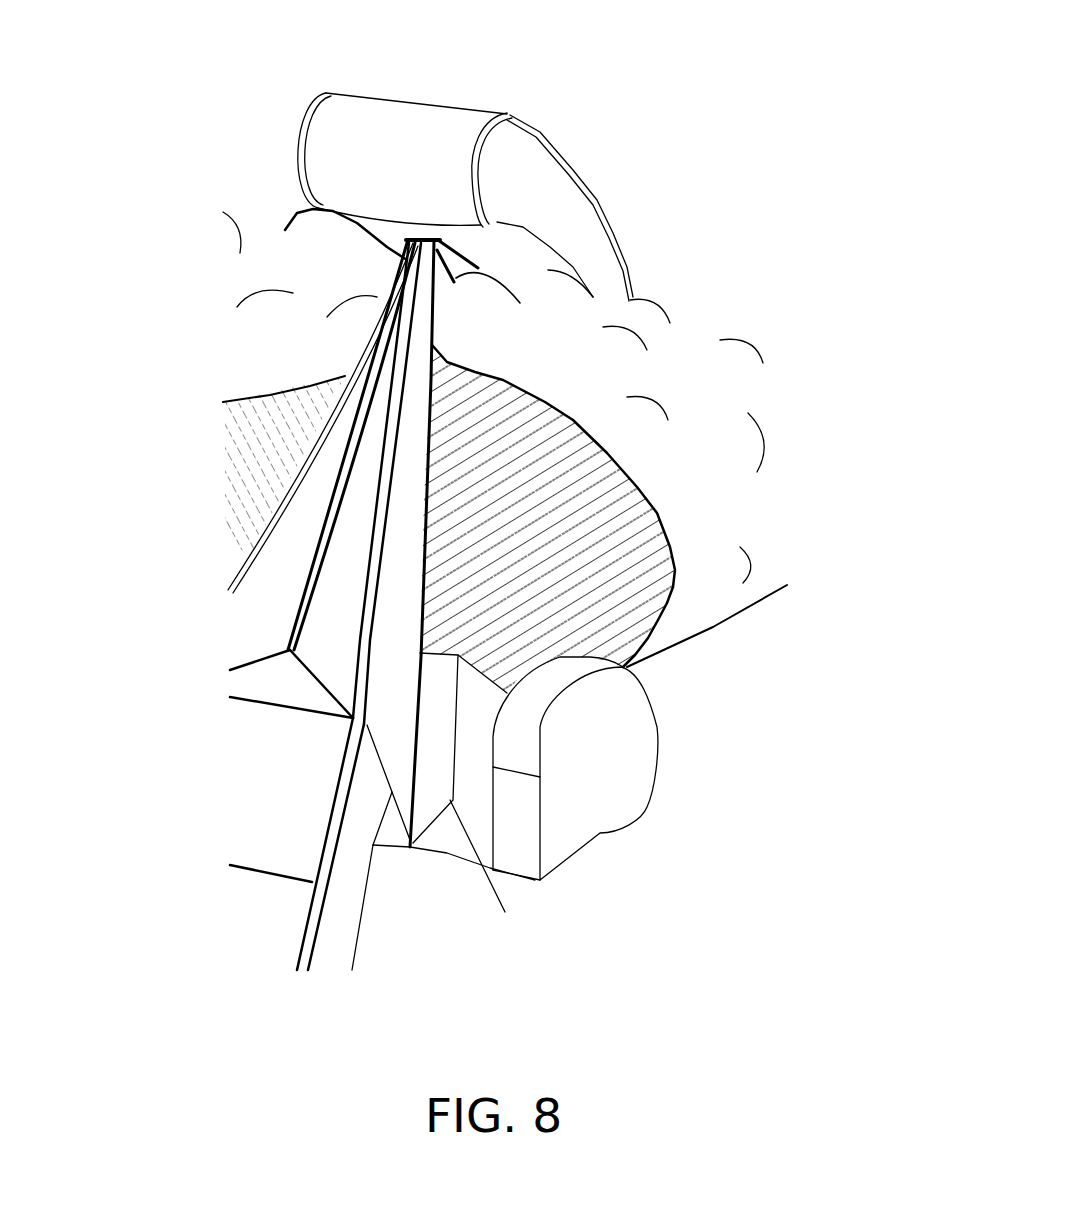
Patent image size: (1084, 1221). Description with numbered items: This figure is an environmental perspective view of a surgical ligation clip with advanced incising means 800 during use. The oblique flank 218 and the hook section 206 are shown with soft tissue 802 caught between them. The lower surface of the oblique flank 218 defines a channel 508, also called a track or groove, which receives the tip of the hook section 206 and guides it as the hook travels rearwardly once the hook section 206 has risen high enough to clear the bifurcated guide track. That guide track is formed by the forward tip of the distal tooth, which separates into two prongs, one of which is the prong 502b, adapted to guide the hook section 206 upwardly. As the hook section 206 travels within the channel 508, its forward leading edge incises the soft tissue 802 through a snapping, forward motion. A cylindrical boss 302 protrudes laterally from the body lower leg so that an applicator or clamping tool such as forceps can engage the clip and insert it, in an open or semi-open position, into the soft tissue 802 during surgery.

The surgical ligation clip with advanced incising means 800 is at (840, 78).
The oblique flank 218 is at (382, 203).
The channel 508 is at (463, 260).
The soft tissue 802 is at (665, 447).
The hook section 206 is at (300, 522).
The prong 502b is at (430, 810).
The boss 302 is at (590, 747).